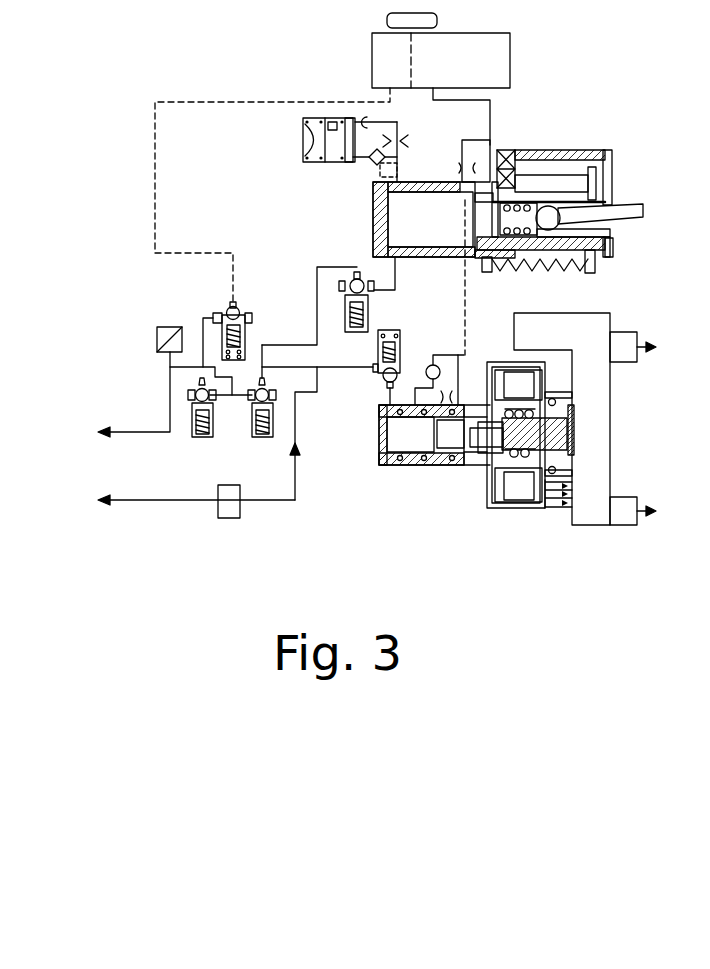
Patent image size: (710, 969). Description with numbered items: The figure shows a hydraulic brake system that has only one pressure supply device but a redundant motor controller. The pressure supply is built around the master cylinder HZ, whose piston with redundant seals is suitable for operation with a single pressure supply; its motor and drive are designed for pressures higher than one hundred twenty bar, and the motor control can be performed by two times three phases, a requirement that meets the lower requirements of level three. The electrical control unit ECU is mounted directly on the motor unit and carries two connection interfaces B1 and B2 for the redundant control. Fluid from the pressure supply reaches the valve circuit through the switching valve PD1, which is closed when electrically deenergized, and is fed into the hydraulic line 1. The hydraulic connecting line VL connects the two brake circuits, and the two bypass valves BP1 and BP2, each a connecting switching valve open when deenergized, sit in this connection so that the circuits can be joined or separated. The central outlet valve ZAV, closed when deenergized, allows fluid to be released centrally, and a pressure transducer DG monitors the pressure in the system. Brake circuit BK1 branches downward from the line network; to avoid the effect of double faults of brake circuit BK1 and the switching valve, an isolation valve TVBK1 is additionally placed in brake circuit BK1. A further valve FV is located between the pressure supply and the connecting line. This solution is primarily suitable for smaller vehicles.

The master cylinder HZ is at (607, 152).
The pressure transducer DG is at (165, 326).
The central outlet valve ZAV is at (248, 323).
The hydraulic connecting line VL is at (242, 393).
The bypass valve 1 BP1 is at (263, 406).
The bypass valve 2 BP2 is at (200, 422).
The release valve FV is at (374, 313).
The switching valve PD1 is at (398, 344).
The hydraulic line 1 is at (343, 370).
The brake circuit 1 BK1 is at (295, 502).
The isolation valve in brake circuit 1 TVBK1 is at (228, 505).
The electrical control unit ECU is at (562, 419).
The bus connection 1 B1 is at (650, 347).
The bus connection 2 B2 is at (650, 511).